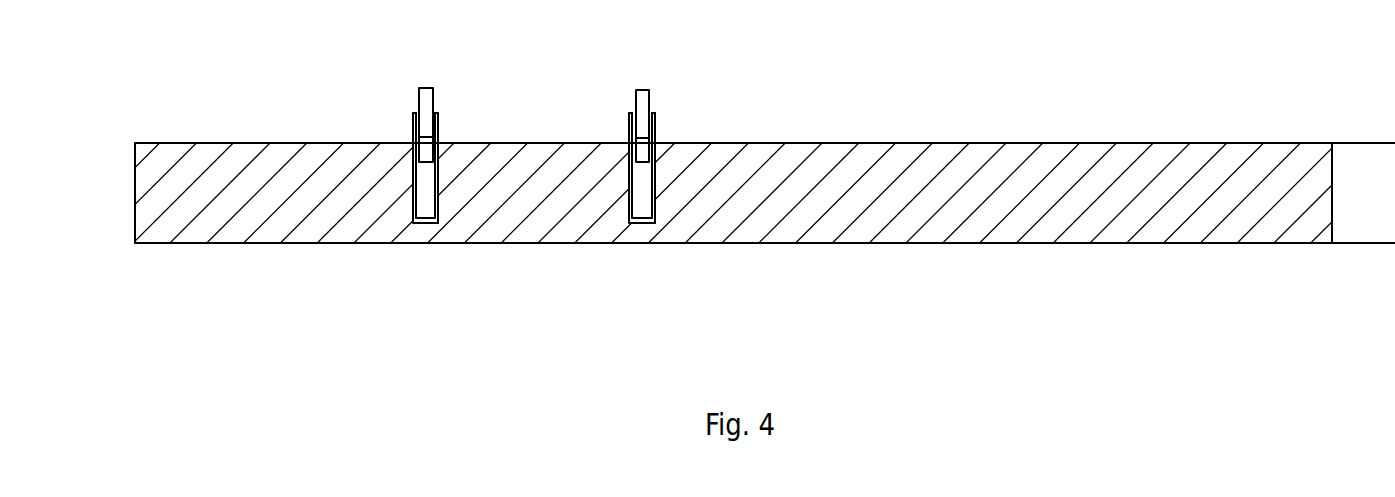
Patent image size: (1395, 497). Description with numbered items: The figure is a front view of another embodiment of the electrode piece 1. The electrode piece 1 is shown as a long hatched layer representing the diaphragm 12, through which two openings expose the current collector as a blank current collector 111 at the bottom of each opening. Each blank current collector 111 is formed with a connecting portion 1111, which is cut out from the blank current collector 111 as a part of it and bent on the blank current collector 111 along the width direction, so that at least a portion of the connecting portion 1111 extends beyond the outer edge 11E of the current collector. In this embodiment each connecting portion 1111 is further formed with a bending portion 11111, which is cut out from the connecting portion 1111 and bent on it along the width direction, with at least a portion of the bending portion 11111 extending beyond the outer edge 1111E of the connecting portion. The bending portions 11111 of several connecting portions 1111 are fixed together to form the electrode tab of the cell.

The electrode piece 1 is at (305, 52).
The diaphragm 12 is at (1010, 150).
The blank current collector 111 is at (433, 223).
The connecting portion 1111 is at (440, 129).
The outer edge of connecting portion 1111E is at (414, 114).
The outer edge of current collector 11E is at (630, 140).
The bending portion 11111 is at (427, 91).